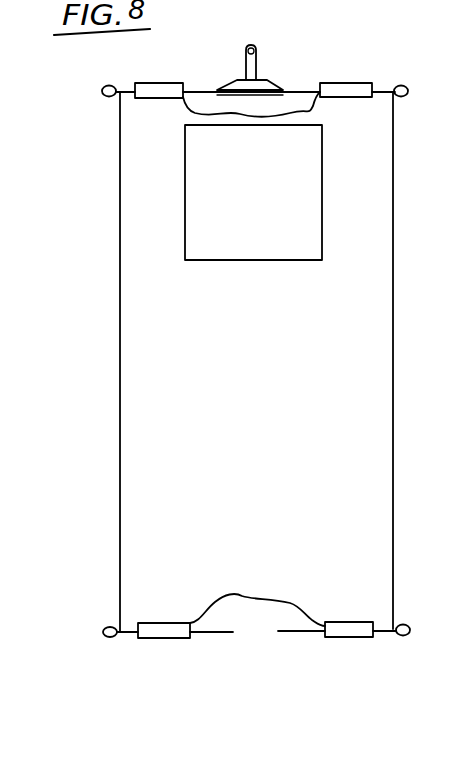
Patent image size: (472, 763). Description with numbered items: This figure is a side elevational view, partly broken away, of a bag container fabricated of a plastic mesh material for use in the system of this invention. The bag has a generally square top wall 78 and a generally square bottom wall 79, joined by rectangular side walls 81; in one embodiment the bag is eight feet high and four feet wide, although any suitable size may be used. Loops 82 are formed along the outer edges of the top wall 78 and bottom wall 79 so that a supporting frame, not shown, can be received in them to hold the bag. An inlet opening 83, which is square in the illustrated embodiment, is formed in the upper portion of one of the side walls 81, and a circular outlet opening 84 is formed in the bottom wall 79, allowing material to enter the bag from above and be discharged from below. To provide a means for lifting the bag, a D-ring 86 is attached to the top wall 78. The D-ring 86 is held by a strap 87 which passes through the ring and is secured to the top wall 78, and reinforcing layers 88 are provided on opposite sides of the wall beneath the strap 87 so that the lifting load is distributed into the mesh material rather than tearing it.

The top wall 78 is at (313, 88).
The bottom wall 79 is at (205, 633).
The side walls 81 is at (152, 340).
The loops 82 is at (102, 88).
The inlet opening 83 is at (247, 260).
The outlet opening 84 is at (270, 627).
The D-ring 86 is at (251, 44).
The strap 87 is at (265, 80).
The reinforcing layers 88 is at (237, 80).